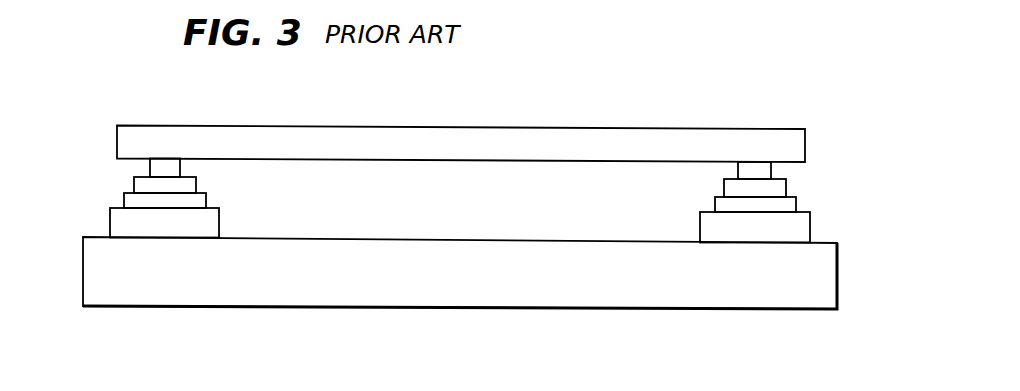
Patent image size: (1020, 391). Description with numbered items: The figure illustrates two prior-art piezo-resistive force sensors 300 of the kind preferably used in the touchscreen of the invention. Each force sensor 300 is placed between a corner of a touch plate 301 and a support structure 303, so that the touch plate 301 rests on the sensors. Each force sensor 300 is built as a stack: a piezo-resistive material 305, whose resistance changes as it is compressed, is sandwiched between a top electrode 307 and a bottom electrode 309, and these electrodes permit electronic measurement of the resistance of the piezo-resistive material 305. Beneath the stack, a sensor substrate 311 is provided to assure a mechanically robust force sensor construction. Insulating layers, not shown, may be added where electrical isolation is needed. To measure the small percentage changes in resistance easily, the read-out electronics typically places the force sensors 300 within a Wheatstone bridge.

The force sensor 300 is at (76, 155).
The touch plate 301 is at (312, 126).
The support structure 303 is at (320, 310).
The piezo-resistive material 305 is at (196, 185).
The top electrode 307 is at (150, 166).
The bottom electrode 309 is at (206, 200).
The sensor substrate 311 is at (219, 222).